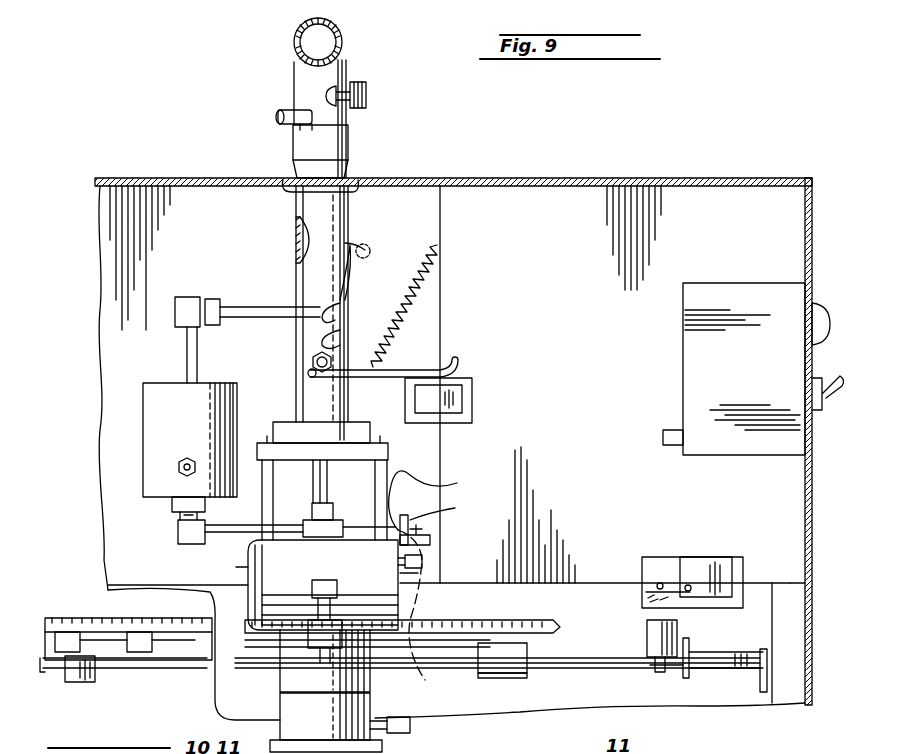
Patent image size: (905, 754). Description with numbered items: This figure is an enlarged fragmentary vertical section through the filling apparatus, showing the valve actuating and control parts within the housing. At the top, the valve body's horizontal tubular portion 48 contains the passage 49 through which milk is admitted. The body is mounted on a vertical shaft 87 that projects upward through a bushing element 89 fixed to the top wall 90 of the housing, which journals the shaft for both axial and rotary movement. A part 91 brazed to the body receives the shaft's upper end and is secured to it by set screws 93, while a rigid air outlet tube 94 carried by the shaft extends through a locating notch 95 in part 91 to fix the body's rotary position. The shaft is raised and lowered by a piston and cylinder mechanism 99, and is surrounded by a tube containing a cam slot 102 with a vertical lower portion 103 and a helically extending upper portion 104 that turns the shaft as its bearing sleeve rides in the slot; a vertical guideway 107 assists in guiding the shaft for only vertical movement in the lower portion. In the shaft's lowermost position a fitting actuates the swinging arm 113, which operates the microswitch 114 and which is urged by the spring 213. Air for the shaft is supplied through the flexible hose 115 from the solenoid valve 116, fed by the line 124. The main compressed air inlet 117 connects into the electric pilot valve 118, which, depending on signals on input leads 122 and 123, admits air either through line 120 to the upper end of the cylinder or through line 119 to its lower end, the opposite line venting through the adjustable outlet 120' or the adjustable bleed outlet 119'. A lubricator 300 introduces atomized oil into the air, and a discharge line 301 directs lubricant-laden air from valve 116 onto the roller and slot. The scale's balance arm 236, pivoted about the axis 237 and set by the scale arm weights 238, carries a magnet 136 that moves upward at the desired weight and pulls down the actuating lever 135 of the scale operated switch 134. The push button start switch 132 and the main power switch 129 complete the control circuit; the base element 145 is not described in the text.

The horizontal tubular portion 48 is at (343, 42).
The passage 49 is at (300, 40).
The shaft 87 is at (340, 88).
The set screws 93 is at (366, 95).
The part 91 is at (350, 120).
The air outlet tube 94 is at (282, 110).
The locating notch 95 is at (305, 124).
The bushing element 89 is at (350, 150).
The top wall 90 is at (422, 178).
The discharge line 301 is at (233, 307).
The cam slot 102 is at (330, 278).
The helically extending upper portion 104 is at (350, 262).
The vertical lower portion 103 is at (335, 312).
The vertical guideway 107 is at (335, 335).
The spring 213 is at (418, 293).
The swinging arm 113 is at (410, 370).
The microswitch 114 is at (462, 383).
The flexible hose 115 is at (190, 464).
The solenoid valve 116 is at (196, 435).
The line 124 is at (258, 527).
The input lead 122 is at (236, 567).
The electric pilot valve 118 is at (380, 590).
The line 120 is at (442, 575).
The adjustable outlet 120' is at (448, 520).
The adjustable bleed outlet 119' is at (448, 532).
The input lead 123 is at (420, 575).
The lubricator 300 is at (332, 644).
The balance arm 236 is at (557, 620).
The magnet 136 is at (647, 640).
The scale arm weights 238 is at (525, 677).
The main compressed air inlet 117 is at (315, 660).
The piston and cylinder mechanism 99 is at (332, 724).
The line 119 is at (421, 727).
The base 145 is at (470, 753).
The axis 237 is at (198, 645).
The push button start switch 132 is at (822, 312).
The main power switch 129 is at (826, 410).
The scale operated switch 134 is at (726, 538).
The actuating lever 135 is at (686, 606).